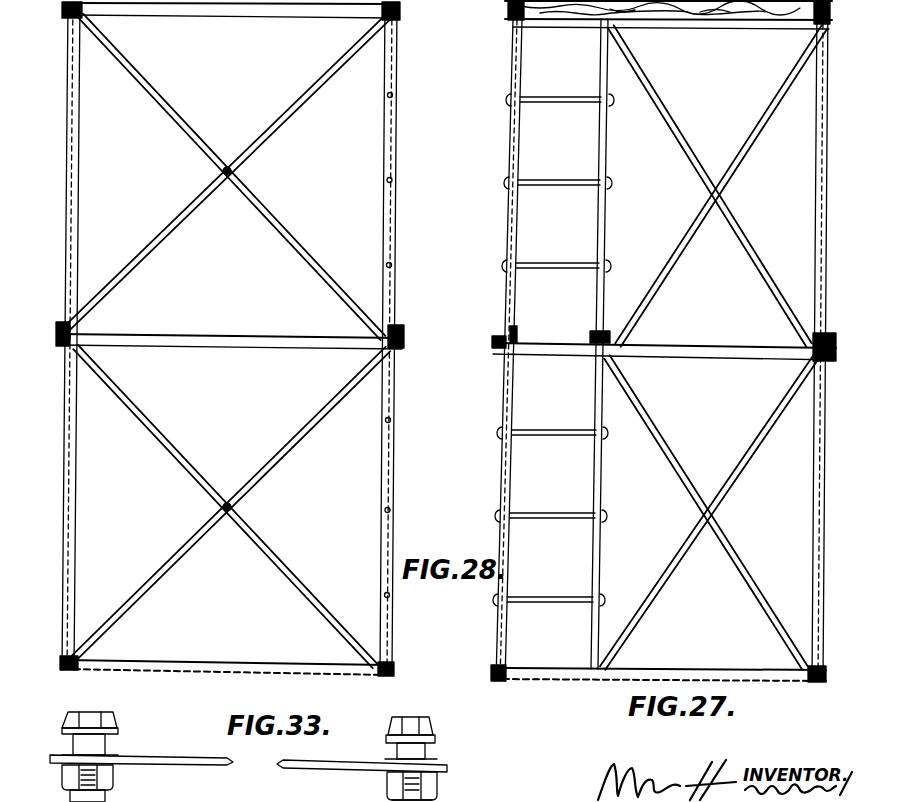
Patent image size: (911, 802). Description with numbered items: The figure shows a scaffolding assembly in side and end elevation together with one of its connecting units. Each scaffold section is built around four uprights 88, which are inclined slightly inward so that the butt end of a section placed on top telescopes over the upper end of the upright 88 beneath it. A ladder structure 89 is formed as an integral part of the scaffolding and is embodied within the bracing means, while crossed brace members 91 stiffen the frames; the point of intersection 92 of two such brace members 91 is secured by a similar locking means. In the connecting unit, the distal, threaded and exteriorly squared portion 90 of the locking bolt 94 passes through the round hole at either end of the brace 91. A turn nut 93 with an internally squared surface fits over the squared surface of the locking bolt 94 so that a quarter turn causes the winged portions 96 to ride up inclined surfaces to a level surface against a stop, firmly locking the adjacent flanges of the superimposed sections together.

In FIG. 28, the uprights 88 is at (73, 214).
In FIG. 27, the uprights 88 is at (510, 210).
In FIG. 27, the ladder structure 89 is at (566, 262).
In FIG. 33, the threaded nut and exteriorly squared portion 90 is at (109, 755).
In FIG. 28, the brace 91 is at (272, 458).
In FIG. 27, the brace 91 is at (752, 445).
In FIG. 33, the brace 91 is at (178, 766).
In FIG. 28, the point of intersection of brace members 92 is at (228, 168).
In FIG. 33, the turn nut 93 is at (432, 782).
In FIG. 33, the locking bolt 94 is at (93, 735).
In FIG. 33, the winged portions 96 is at (68, 718).